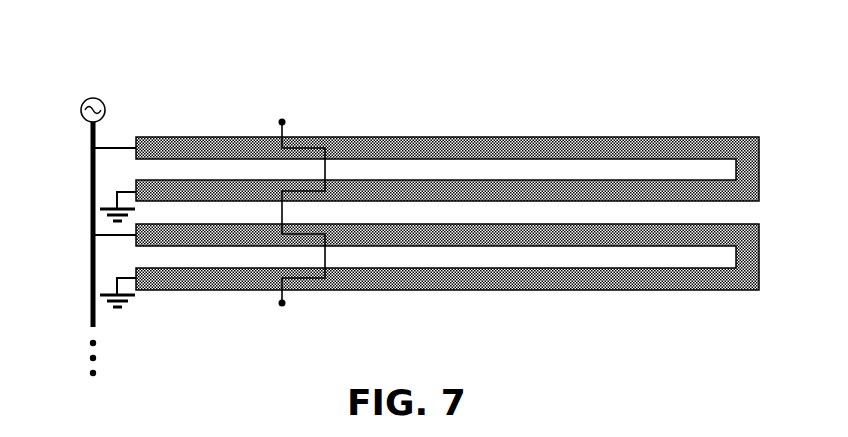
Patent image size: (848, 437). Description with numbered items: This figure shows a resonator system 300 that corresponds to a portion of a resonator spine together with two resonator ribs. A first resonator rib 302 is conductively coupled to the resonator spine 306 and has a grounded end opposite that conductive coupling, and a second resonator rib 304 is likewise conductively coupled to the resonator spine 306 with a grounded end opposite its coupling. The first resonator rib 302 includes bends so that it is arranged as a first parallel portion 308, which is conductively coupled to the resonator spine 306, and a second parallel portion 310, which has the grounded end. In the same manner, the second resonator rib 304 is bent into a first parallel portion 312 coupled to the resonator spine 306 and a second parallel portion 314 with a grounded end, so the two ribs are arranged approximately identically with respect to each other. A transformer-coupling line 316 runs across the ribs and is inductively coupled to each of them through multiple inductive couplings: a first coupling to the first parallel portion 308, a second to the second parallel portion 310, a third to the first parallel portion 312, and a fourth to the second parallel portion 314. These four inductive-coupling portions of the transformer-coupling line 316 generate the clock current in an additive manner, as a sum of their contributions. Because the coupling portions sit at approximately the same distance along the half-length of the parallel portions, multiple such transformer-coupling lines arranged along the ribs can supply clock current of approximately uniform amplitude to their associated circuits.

The resonator system 300 is at (121, 57).
The first resonator rib 302 is at (732, 132).
The second resonator rib 304 is at (722, 298).
The resonator spine 306 is at (90, 176).
The first parallel portion 308 is at (615, 137).
The second parallel portion 310 is at (615, 180).
The first parallel portion 312 is at (615, 224).
The second parallel portion 314 is at (615, 268).
The transformer-coupling line 316 is at (310, 125).